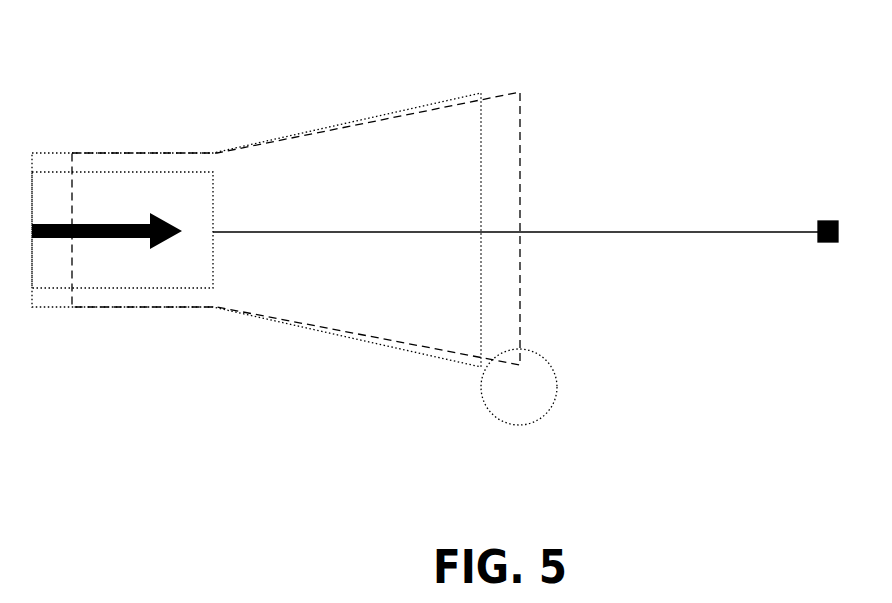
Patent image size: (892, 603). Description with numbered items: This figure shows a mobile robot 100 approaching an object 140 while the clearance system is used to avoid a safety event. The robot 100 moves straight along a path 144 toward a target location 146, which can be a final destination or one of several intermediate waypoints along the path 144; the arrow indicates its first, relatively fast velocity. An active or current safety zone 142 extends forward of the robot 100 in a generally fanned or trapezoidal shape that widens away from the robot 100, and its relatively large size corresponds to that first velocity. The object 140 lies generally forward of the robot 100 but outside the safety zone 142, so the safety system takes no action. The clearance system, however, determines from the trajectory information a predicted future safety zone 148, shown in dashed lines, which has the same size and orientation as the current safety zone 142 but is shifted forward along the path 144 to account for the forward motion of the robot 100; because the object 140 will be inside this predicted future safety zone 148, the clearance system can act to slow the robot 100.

The robot 100 is at (128, 183).
The object 140 is at (550, 390).
The safety zone 142 is at (302, 137).
The path 144 is at (753, 232).
The target location 146 is at (827, 221).
The predicted future safety zone 148 is at (508, 123).